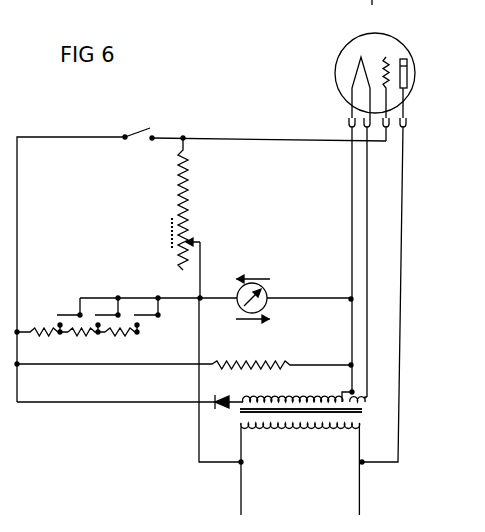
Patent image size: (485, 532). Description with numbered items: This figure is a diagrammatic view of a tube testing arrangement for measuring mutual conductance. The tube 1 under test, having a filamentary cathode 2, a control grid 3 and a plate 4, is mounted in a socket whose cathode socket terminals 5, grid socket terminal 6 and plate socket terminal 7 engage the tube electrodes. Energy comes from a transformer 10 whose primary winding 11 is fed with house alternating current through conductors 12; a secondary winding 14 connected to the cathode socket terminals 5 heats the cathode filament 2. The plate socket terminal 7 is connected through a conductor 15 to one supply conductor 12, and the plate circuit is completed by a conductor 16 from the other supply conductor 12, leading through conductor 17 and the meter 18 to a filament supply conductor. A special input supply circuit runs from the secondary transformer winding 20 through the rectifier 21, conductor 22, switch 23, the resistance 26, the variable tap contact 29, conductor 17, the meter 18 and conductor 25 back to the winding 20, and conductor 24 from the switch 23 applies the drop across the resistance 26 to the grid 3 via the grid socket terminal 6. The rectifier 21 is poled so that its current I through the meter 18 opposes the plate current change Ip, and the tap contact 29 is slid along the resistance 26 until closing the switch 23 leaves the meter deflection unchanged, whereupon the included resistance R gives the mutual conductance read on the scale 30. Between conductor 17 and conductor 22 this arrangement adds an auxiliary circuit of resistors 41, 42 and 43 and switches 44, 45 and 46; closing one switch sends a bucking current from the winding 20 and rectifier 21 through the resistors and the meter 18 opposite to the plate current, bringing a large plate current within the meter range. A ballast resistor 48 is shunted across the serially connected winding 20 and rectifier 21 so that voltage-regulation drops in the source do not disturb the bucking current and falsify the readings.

The tube 1 is at (408, 78).
The filamentary cathode 2 is at (354, 75).
The control grid 3 is at (392, 57).
The plate 4 is at (408, 66).
The cathode socket terminals 5 is at (357, 127).
The grid socket terminal 6 is at (389, 127).
The plate socket terminal 7 is at (406, 127).
The transformer 10 is at (315, 415).
The primary winding 11 is at (292, 428).
The conductors 12 is at (242, 481).
The secondary winding 14 is at (367, 402).
The conductor 15 is at (399, 427).
The conductor 16 is at (199, 431).
The conductor 17 is at (220, 303).
The meter 18 is at (265, 304).
The secondary transformer winding 20 is at (273, 397).
The rectifier 21 is at (213, 397).
The conductor 22 is at (18, 256).
The switch 23 is at (137, 131).
The conductor 24 is at (252, 138).
The conductor 25 is at (347, 387).
The resistance 26 is at (190, 179).
The variable tap contact 29 is at (197, 242).
The scale 30 is at (171, 240).
The resistor 41 is at (47, 337).
The resistor 42 is at (97, 338).
The resistor 43 is at (119, 338).
The switch 44 is at (66, 311).
The switch 45 is at (102, 307).
The switch 46 is at (141, 307).
The ballast resistor 48 is at (256, 362).